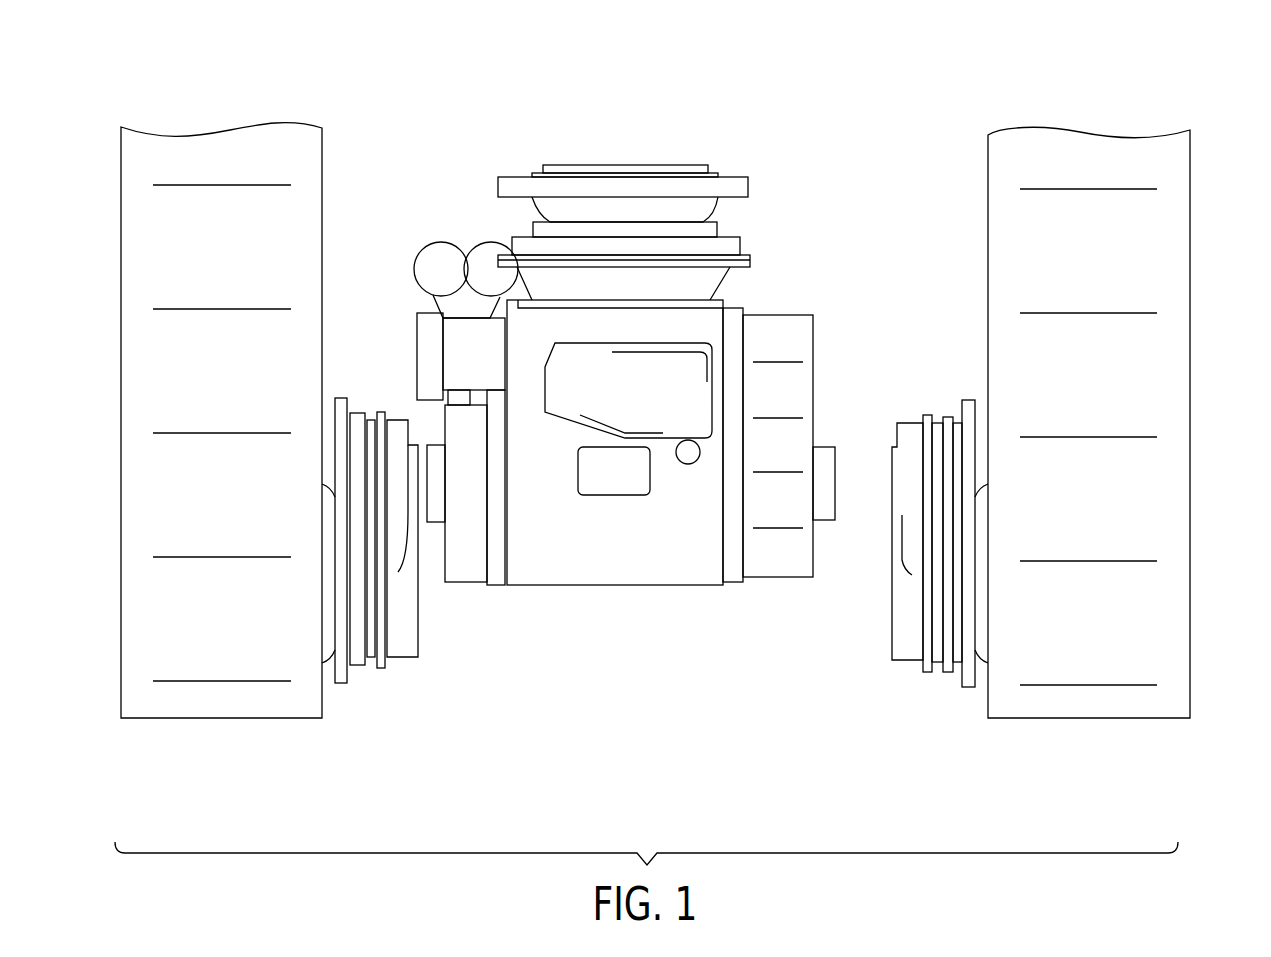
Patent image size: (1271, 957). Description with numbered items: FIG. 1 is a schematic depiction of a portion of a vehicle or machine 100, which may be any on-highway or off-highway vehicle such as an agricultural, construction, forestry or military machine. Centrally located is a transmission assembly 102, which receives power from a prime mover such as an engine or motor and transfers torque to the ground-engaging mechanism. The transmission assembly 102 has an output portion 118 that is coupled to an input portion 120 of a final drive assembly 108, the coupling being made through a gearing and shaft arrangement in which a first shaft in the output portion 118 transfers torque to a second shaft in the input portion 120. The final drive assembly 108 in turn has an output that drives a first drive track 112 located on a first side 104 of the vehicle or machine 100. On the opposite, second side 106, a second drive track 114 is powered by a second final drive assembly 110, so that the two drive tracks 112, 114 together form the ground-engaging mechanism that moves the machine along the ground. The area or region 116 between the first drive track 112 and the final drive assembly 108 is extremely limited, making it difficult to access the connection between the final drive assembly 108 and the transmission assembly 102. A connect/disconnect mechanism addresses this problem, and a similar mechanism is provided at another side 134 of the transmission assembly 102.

The vehicle or machine 100 is at (205, 85).
The transmission assembly 102 is at (624, 421).
The first side 104 is at (269, 460).
The second side 106 is at (1040, 453).
The final drive assembly 108 is at (371, 549).
The second final drive assembly 110 is at (925, 688).
The first drive track 112 is at (280, 145).
The second drive track 114 is at (1068, 140).
The area or region 116 is at (330, 398).
The output portion 118 is at (431, 557).
The input portion 120 is at (411, 423).
The another side 134 is at (779, 592).